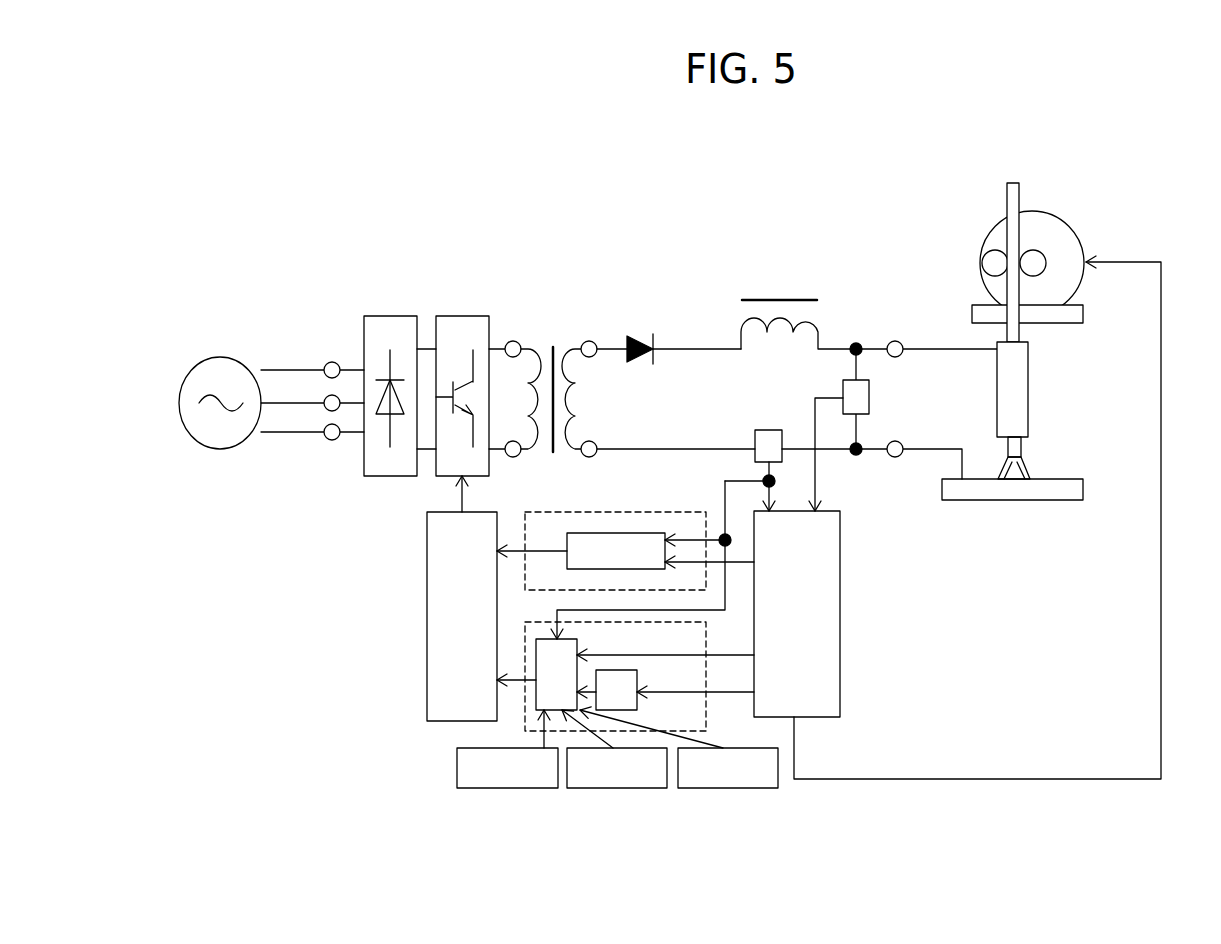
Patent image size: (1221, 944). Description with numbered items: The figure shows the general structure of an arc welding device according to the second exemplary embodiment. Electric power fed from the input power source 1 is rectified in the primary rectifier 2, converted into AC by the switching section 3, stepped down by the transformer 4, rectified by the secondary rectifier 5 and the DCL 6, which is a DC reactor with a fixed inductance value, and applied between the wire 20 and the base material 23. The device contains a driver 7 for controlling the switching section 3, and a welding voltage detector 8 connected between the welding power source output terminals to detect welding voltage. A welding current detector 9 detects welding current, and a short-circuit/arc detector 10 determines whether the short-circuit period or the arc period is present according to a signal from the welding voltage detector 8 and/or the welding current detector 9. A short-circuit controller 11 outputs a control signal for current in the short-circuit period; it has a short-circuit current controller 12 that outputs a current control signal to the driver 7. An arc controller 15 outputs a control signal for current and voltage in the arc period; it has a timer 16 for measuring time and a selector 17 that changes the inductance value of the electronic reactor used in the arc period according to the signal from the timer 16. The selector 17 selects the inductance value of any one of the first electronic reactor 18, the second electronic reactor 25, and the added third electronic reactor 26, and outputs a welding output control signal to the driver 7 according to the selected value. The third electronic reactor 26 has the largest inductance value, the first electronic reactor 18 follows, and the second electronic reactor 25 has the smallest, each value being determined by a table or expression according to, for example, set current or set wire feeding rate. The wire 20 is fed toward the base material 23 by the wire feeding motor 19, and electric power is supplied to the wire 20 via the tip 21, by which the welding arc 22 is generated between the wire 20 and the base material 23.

The input power source 1 is at (228, 355).
The primary rectifier 2 is at (387, 317).
The switching section 3 is at (457, 317).
The transformer 4 is at (553, 340).
The secondary rectifier 5 is at (642, 322).
The DCL 6 is at (788, 290).
The driver 7 is at (427, 630).
The welding voltage detector 8 is at (869, 400).
The welding current detector 9 is at (765, 430).
The short-circuit/arc detector 10 is at (840, 593).
The short-circuit controller 11 is at (665, 512).
The short-circuit current controller 12 is at (615, 533).
The arc controller 15 is at (706, 705).
The timer 16 is at (637, 677).
The selector 17 is at (535, 708).
The first electronic reactor 18 is at (630, 790).
The wire feeding motor 19 is at (1085, 245).
The wire 20 is at (1005, 205).
The tip 21 is at (1028, 408).
The welding arc 22 is at (1025, 465).
The base material 23 is at (1050, 500).
The second electronic reactor 25 is at (510, 790).
The third electronic reactor 26 is at (745, 790).